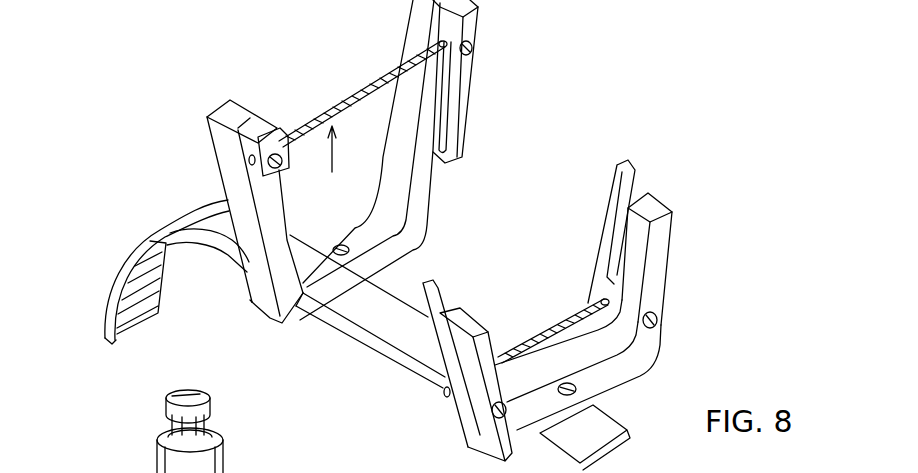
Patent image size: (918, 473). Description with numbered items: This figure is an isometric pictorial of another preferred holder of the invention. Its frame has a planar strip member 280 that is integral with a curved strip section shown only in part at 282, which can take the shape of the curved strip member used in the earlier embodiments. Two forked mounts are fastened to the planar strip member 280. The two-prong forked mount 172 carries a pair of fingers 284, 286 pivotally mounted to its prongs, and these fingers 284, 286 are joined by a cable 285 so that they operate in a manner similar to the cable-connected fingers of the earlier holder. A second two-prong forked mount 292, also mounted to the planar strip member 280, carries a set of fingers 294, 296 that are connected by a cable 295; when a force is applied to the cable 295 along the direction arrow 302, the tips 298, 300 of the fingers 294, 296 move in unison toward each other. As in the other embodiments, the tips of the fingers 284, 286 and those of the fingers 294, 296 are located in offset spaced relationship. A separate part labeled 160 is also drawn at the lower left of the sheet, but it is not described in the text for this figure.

The knob 160 is at (156, 438).
The two-prong forked mount 172 is at (679, 340).
The planar strip member 280 is at (364, 338).
The curved strip section 282 is at (105, 298).
The finger 284 is at (427, 357).
The cable 285 is at (547, 332).
The finger 286 is at (598, 227).
The two-prong forked mount 292 is at (245, 297).
The finger 294 is at (291, 205).
The cable 295 is at (332, 107).
The finger 296 is at (488, 91).
The tip 298 is at (250, 278).
The tip 300 is at (460, 161).
The direction arrow 302 is at (340, 152).